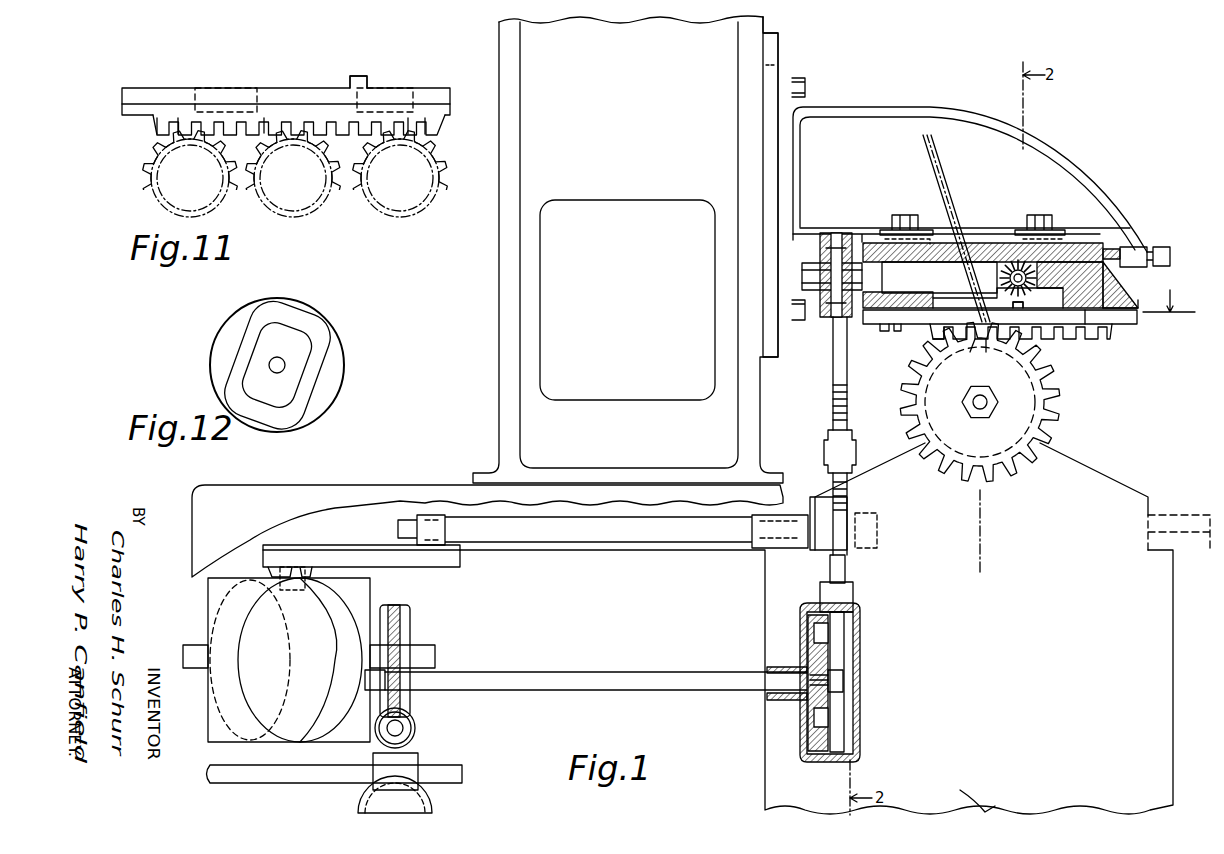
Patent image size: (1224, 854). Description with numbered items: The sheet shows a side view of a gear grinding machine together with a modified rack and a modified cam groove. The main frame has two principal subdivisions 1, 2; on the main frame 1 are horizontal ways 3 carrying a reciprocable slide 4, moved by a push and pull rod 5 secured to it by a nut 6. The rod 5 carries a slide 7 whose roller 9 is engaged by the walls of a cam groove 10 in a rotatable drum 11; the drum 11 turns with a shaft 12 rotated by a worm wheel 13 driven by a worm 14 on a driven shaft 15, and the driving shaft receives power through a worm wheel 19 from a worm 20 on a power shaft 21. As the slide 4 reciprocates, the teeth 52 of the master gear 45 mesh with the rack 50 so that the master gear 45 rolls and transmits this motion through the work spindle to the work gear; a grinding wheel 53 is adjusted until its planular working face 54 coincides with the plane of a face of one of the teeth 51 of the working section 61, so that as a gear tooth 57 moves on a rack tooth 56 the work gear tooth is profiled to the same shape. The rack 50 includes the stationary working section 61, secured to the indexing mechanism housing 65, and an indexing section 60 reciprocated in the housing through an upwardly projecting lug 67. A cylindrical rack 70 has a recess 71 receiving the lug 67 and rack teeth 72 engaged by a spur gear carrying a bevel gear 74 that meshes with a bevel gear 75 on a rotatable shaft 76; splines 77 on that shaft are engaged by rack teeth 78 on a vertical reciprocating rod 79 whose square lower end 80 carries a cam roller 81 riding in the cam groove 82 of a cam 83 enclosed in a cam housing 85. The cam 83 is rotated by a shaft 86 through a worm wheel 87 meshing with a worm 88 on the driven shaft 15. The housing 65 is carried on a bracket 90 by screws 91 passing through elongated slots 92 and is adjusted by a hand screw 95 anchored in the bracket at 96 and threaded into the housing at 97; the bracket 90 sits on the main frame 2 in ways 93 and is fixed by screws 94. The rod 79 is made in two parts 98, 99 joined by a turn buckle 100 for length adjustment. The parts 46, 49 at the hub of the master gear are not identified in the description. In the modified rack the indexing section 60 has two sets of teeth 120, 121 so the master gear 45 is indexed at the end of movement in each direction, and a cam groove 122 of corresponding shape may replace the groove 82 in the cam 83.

In FIG. 1, the main frame 1 is at (682, 628).
In FIG. 1, the main frame 2 is at (628, 249).
In FIG. 1, the horizontal ways 3 is at (1165, 512).
In FIG. 1, the reciprocable slide 4 is at (1118, 495).
In FIG. 1, the push and pull rod 5 is at (630, 540).
In FIG. 1, the nut 6 is at (864, 512).
In FIG. 1, the slide 7 is at (440, 562).
In FIG. 1, the roller 9 is at (280, 582).
In FIG. 1, the cam groove 10 is at (340, 598).
In FIG. 1, the rotatable drum 11 is at (365, 605).
In FIG. 1, the shaft 12 is at (428, 648).
In FIG. 1, the worm wheel 13 is at (408, 620).
In FIG. 1, the worm 14 is at (410, 722).
In FIG. 1, the driven shaft 15 is at (403, 728).
In FIG. 1, the worm wheel 19 is at (425, 810).
In FIG. 1, the worm 20 is at (372, 790).
In FIG. 1, the power shaft 21 is at (270, 778).
In FIG. 11, the master gear 45 is at (262, 150).
In FIG. 1, the master gear 45 is at (1050, 406).
In FIG. 1, the shaft 46 is at (1000, 406).
In FIG. 1, the nut 49 is at (1000, 400).
In FIG. 11, the rack 50 is at (299, 125).
In FIG. 1, the rack 50 is at (930, 343).
In FIG. 11, the teeth 51 is at (266, 120).
In FIG. 1, the teeth 51 is at (928, 332).
In FIG. 1, the teeth 52 is at (922, 372).
In FIG. 1, the grinding wheel 53 is at (940, 152).
In FIG. 1, the planular working face 54 is at (932, 168).
In FIG. 1, the rack tooth 56 is at (991, 355).
In FIG. 1, the gear tooth 57 is at (965, 356).
In FIG. 11, the indexing section 60 is at (125, 111).
In FIG. 11, the working section 61 is at (245, 100).
In FIG. 1, the indexing mechanism housing 65 is at (1145, 297).
In FIG. 11, the lug 67 is at (358, 76).
In FIG. 1, the lug 67 is at (1038, 328).
In FIG. 1, the cylindrical rack 70 is at (1098, 326).
In FIG. 1, the recess 71 is at (1070, 330).
In FIG. 1, the rack teeth 72 is at (1070, 244).
In FIG. 1, the bevel gear 74 is at (1018, 262).
In FIG. 1, the bevel gear 75 is at (1008, 270).
In FIG. 1, the rotatable shaft 76 is at (942, 268).
In FIG. 1, the splines 77 is at (812, 263).
In FIG. 1, the rack teeth 78 is at (830, 313).
In FIG. 1, the reciprocating rod 79 is at (834, 373).
In FIG. 1, the lower end 80 is at (846, 570).
In FIG. 1, the cam roller 81 is at (815, 632).
In FIG. 1, the cam groove 82 is at (826, 717).
In FIG. 1, the cam 83 is at (826, 738).
In FIG. 1, the cam housing 85 is at (861, 606).
In FIG. 1, the shaft 86 is at (665, 677).
In FIG. 1, the worm wheel 87 is at (400, 686).
In FIG. 1, the worm 88 is at (412, 740).
In FIG. 1, the bracket 90 is at (1070, 165).
In FIG. 1, the screws 91 is at (900, 215).
In FIG. 1, the elongated slots 92 is at (882, 239).
In FIG. 1, the ways 93 is at (779, 47).
In FIG. 1, the screws 94 is at (805, 88).
In FIG. 1, the hand screw 95 is at (1165, 252).
In FIG. 1, the anchorage 96 is at (1140, 247).
In FIG. 1, the threaded connection 97 is at (1108, 265).
In FIG. 1, the rod part 98 is at (833, 407).
In FIG. 1, the rod part 99 is at (833, 488).
In FIG. 1, the turn buckle 100 is at (824, 449).
In FIG. 11, the teeth 120 is at (180, 118).
In FIG. 11, the teeth 121 is at (427, 125).
In FIG. 12, the cam groove 122 is at (313, 326).